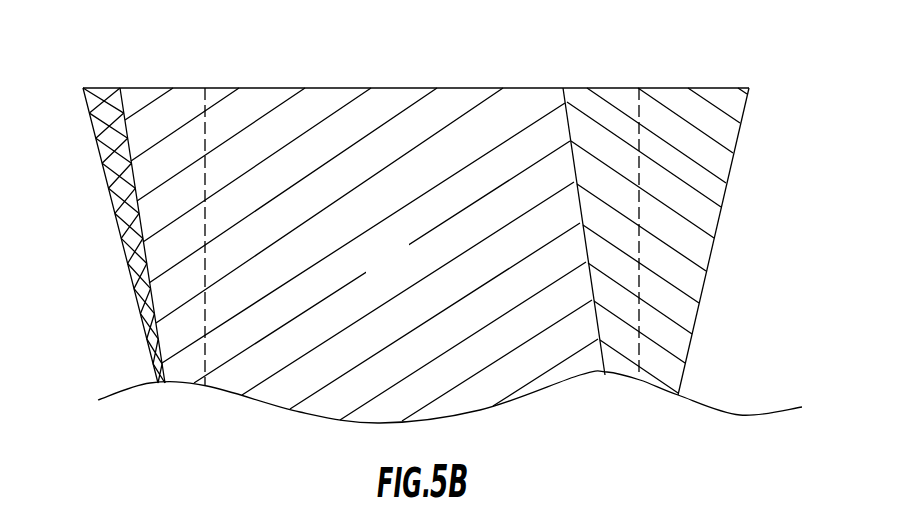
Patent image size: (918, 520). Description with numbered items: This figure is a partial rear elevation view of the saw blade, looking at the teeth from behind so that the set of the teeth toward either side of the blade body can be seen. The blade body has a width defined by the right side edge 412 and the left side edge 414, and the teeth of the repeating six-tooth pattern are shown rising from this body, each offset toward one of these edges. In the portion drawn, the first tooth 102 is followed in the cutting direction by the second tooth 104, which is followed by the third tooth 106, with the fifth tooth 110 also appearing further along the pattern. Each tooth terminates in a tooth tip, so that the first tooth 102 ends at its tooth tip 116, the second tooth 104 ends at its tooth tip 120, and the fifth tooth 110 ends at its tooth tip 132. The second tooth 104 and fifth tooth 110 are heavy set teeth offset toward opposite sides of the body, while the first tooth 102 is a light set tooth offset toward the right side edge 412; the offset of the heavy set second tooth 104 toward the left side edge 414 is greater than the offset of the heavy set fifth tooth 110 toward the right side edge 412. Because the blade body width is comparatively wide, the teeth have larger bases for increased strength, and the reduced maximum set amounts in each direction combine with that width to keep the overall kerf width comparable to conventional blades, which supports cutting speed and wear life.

The first tooth 102 is at (403, 273).
The second tooth 104 is at (693, 213).
The third tooth 106 is at (517, 72).
The fifth tooth 110 is at (122, 190).
The tooth tip 116 is at (150, 87).
The tooth tip 120 is at (715, 87).
The tooth tip 132 is at (100, 87).
The right side edge 412 is at (205, 291).
The left side edge 414 is at (640, 280).